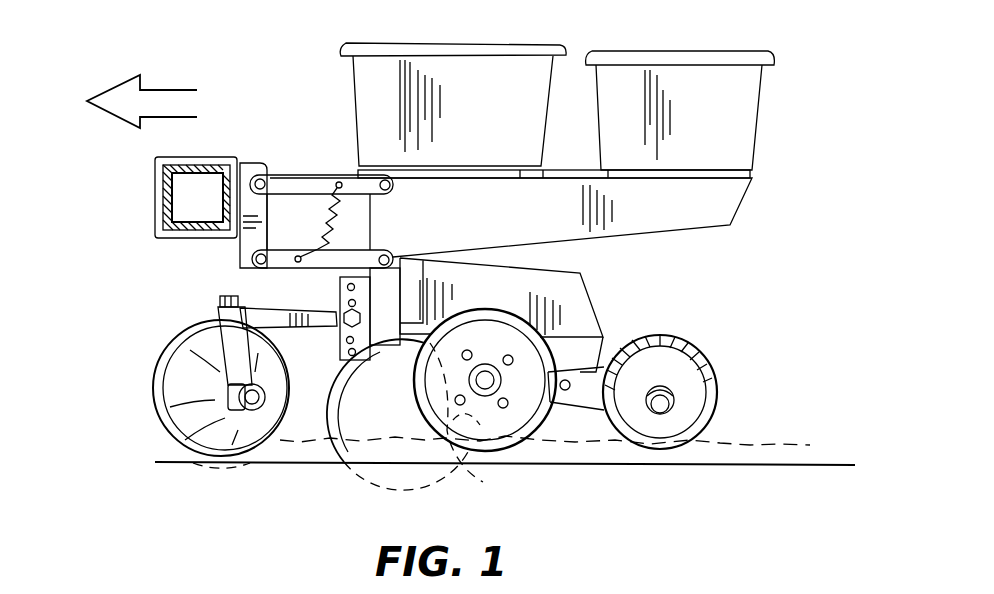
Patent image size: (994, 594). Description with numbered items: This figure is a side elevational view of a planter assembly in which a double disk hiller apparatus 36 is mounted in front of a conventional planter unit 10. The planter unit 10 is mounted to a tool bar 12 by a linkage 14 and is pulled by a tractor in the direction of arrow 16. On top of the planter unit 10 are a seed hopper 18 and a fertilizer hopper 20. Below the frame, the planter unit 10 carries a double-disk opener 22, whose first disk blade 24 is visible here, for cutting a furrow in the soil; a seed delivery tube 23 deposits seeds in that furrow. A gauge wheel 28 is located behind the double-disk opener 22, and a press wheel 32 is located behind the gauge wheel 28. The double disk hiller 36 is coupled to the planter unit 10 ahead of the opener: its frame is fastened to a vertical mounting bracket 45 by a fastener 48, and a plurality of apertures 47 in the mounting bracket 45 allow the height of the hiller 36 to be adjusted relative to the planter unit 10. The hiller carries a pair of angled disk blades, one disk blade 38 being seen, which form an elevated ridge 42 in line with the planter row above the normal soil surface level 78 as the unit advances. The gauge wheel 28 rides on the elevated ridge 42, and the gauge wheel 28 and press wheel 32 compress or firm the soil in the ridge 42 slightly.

The planter unit 10 is at (142, 70).
The tool bar 12 is at (176, 200).
The linkage 14 is at (310, 158).
The arrow 16 is at (140, 120).
The seed hopper 18 is at (373, 85).
The fertilizer hopper 20 is at (737, 128).
The double-disk opener 22 is at (327, 404).
The seed delivery tube 23 is at (486, 462).
The first disk blade 24 is at (363, 393).
The gauge wheel 28 is at (523, 413).
The press wheel 32 is at (693, 393).
The double disk hiller apparatus 36 is at (190, 311).
The disk blade 38 is at (178, 378).
The elevated ridge 42 is at (292, 443).
The vertical mounting bracket 45 is at (337, 345).
The apertures 47 is at (348, 287).
The fastener 48 is at (347, 318).
The normal soil surface level 78 is at (750, 445).